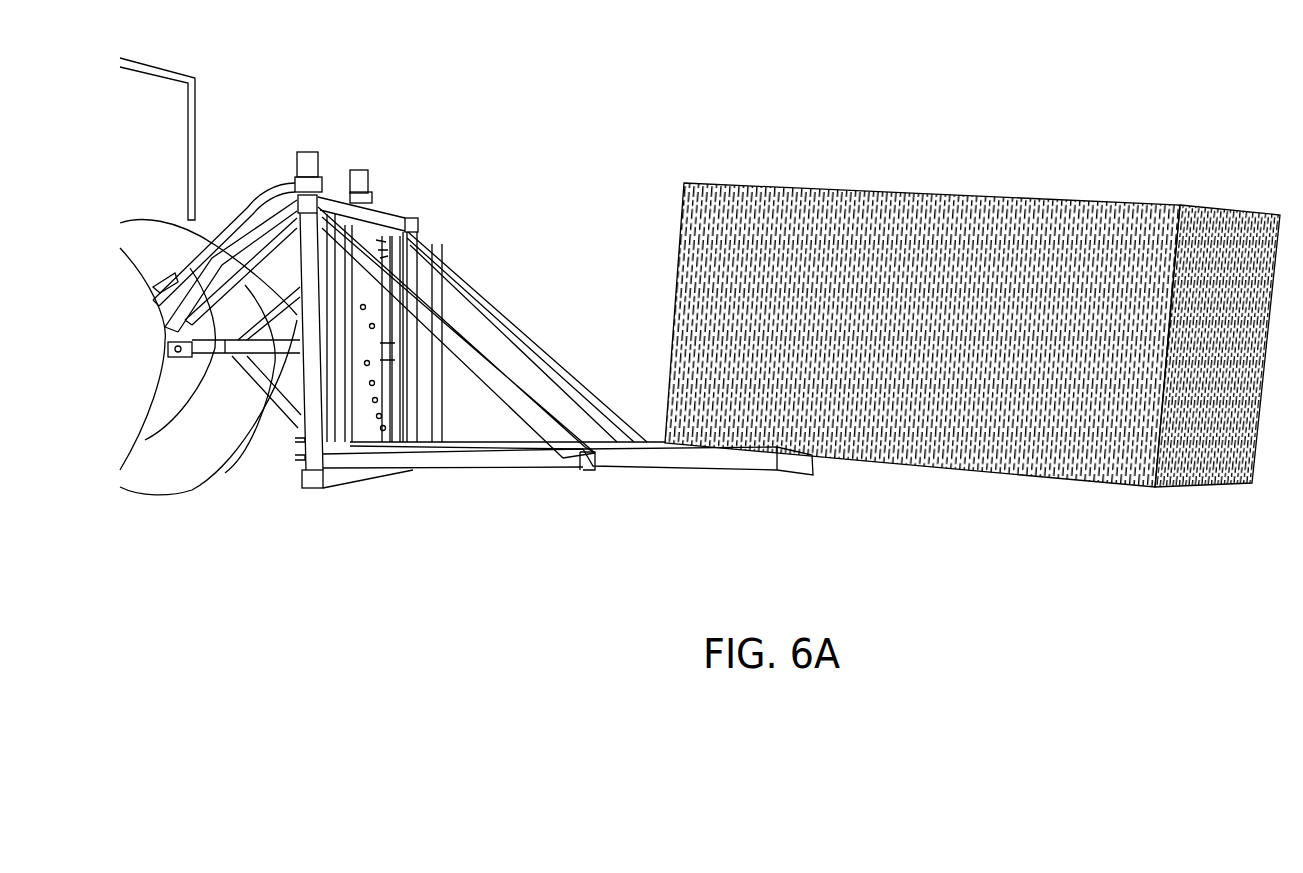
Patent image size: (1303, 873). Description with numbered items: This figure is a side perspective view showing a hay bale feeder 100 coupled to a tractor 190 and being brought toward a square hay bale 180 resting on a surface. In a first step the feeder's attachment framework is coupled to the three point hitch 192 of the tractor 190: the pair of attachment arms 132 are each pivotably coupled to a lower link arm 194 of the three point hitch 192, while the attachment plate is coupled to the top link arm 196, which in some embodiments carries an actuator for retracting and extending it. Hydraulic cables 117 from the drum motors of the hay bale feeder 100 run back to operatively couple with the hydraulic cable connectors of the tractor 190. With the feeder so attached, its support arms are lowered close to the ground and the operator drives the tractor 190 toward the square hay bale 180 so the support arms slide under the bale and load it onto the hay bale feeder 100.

The hay bale feeder 100 is at (474, 117).
The hydraulic cables 117 is at (240, 228).
The attachment arms 132 is at (220, 352).
The square hay bale 180 is at (944, 193).
The tractor 190 is at (197, 84).
The three point hitch 192 is at (155, 287).
The lower link arm 194 is at (178, 358).
The top link arm 196 is at (280, 186).